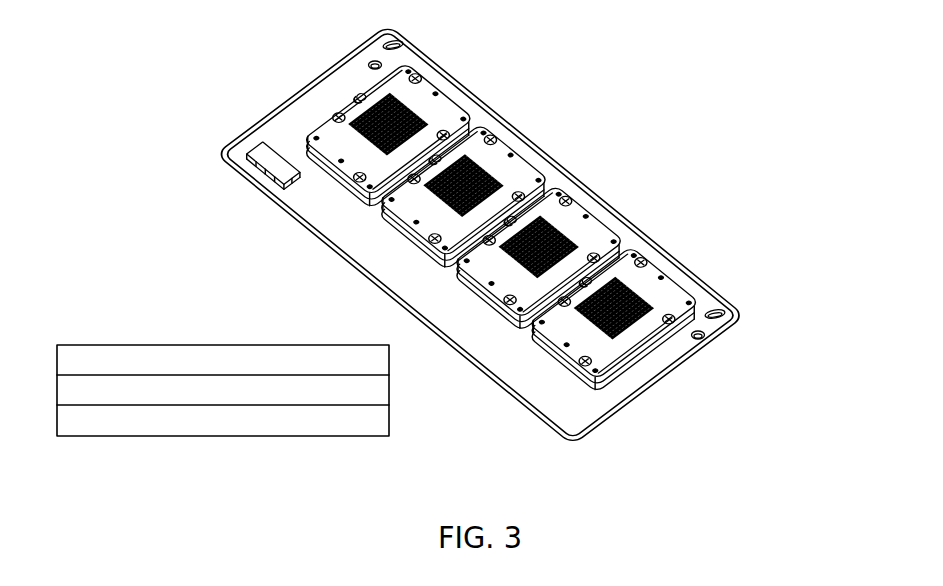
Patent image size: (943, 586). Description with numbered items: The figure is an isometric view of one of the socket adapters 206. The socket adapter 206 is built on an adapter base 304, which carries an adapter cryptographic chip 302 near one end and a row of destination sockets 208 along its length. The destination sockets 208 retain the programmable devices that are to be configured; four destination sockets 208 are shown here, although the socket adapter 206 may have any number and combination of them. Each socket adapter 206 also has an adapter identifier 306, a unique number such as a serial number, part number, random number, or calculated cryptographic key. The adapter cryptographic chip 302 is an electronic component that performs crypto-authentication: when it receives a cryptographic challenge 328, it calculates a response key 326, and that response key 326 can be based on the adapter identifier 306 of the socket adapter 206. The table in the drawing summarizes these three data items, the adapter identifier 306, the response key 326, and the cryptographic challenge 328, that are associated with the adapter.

The socket adapter 206 is at (282, 88).
The destination sockets 208 is at (450, 108).
The adapter cryptographic chip 302 is at (263, 152).
The adapter base 304 is at (428, 297).
The adapter identifier 306 is at (312, 371).
The response key 326 is at (333, 401).
The cryptographic challenge 328 is at (361, 431).